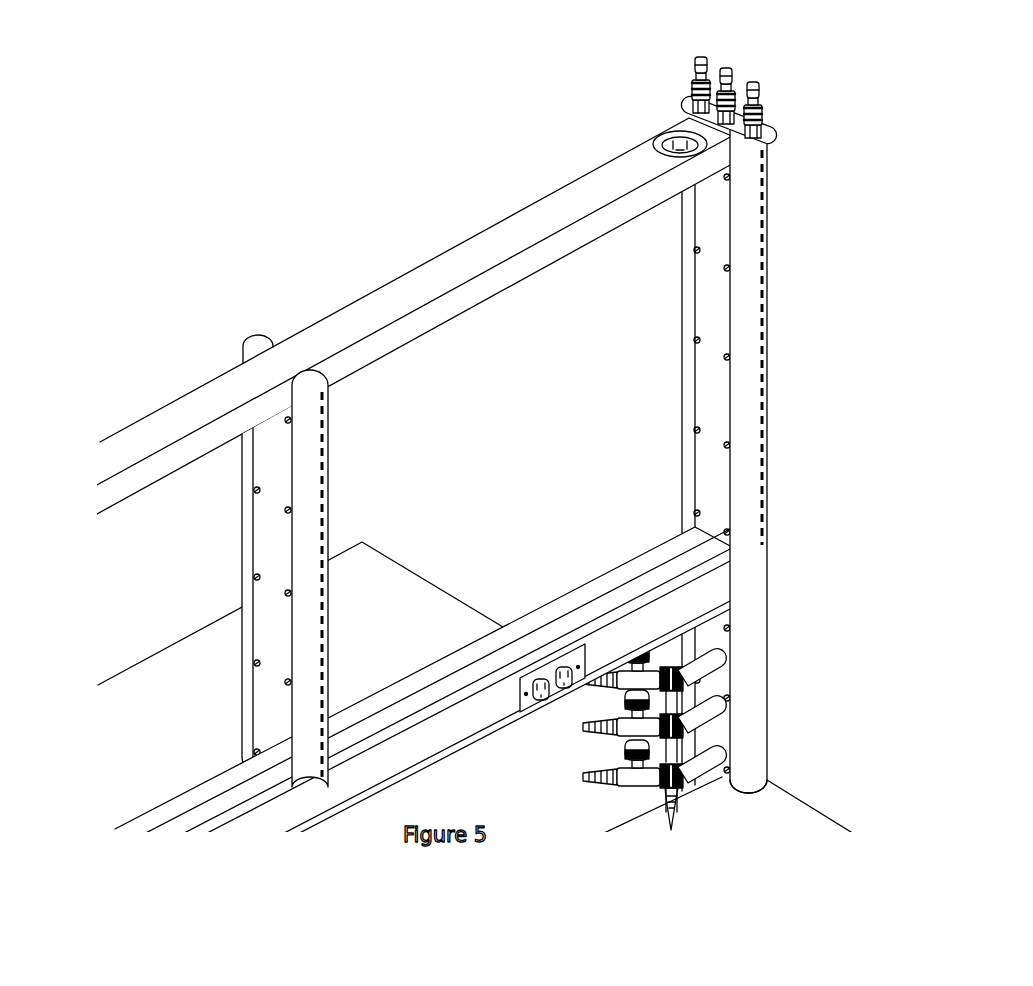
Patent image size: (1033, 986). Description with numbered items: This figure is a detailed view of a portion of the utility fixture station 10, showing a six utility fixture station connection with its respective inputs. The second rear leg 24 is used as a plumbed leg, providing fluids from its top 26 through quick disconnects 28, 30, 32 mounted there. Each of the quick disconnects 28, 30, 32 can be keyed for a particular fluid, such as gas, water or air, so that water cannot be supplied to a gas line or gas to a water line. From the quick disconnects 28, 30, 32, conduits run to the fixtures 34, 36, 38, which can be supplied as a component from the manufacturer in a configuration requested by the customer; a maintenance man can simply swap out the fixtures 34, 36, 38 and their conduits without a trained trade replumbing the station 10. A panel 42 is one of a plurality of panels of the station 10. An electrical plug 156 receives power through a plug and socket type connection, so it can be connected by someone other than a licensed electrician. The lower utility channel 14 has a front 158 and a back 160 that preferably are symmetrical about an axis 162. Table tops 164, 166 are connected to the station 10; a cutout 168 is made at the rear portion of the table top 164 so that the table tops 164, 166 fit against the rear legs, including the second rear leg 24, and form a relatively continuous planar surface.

The station 10 is at (792, 292).
The lower utility channel 14 is at (423, 701).
The second rear leg 24 is at (756, 596).
The top 26 is at (730, 77).
The quick disconnect 28 is at (764, 116).
The quick disconnect 30 is at (736, 80).
The quick disconnect 32 is at (692, 67).
The fixture 34 is at (708, 657).
The fixture 36 is at (710, 706).
The fixture 38 is at (708, 762).
The panel 42 is at (722, 384).
The electrical plug 156 is at (665, 138).
The front 158 is at (656, 627).
The back 160 is at (595, 566).
The axis 162 is at (558, 618).
The table top 164 is at (735, 858).
The table top 166 is at (608, 806).
The cutout 168 is at (752, 795).